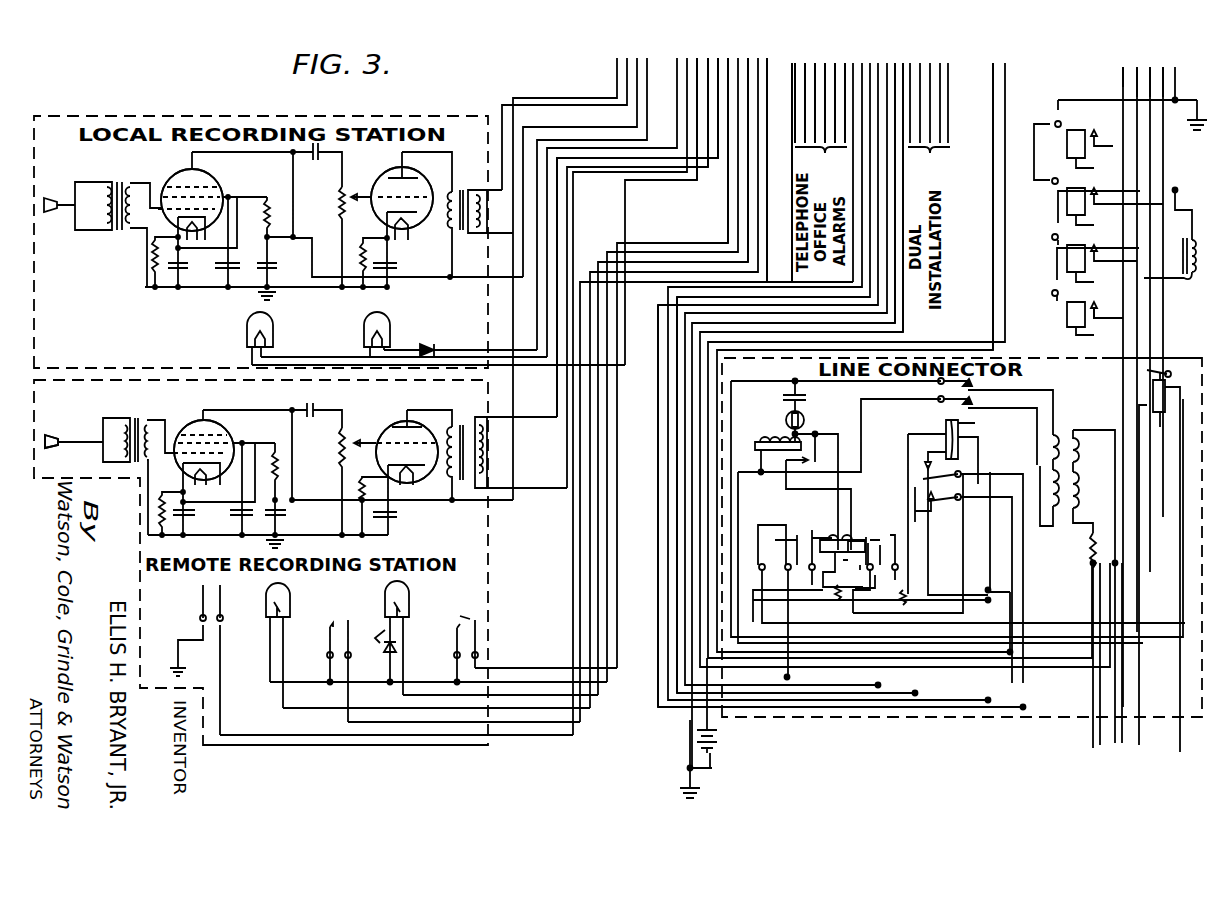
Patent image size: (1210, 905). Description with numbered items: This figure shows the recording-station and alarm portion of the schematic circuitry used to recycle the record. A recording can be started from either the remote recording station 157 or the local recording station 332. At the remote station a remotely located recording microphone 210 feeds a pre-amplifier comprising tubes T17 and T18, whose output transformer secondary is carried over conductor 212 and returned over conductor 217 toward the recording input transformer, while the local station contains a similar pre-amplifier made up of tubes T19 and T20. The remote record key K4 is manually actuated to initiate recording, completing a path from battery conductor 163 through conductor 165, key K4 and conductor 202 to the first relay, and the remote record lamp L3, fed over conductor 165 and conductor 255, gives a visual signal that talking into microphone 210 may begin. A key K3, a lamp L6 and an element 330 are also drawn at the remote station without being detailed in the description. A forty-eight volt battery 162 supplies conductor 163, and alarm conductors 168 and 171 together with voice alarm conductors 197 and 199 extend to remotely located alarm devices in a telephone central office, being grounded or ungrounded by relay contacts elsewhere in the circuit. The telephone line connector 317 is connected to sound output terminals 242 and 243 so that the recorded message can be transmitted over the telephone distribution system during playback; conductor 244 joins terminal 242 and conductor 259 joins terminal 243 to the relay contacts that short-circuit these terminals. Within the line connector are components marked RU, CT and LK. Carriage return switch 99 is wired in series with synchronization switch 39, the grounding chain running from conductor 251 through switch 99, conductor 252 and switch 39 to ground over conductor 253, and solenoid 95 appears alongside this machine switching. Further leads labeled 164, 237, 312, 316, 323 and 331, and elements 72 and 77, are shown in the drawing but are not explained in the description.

The conductor 212 is at (715, 68).
The alarm conductor 168 is at (793, 63).
The alarm conductor 171 is at (805, 63).
The voice alarm conductor 197 is at (818, 63).
The voice alarm conductor 199 is at (836, 63).
The conductor 237 is at (1118, 75).
The local recording station 332 is at (1140, 65).
The conductor 312 is at (1166, 75).
The conductor 251 is at (1140, 83).
The conductor 253 is at (1058, 100).
The synchronization switch 39 is at (1063, 120).
The relay 77 is at (1050, 186).
The relay 72 is at (1050, 243).
The carriage return switch 99 is at (1050, 299).
The solenoid 95 is at (1182, 286).
The conductor 252 is at (1115, 310).
The telephone line connector 317 is at (1105, 346).
The battery conductor 163 is at (993, 296).
The conductor 323 is at (905, 310).
The conductor 316 is at (910, 332).
The conductor 217 is at (697, 120).
The conductor 202 is at (682, 144).
The conductor 164 is at (726, 180).
The conductor 331 is at (747, 189).
The conductor 165 is at (789, 202).
The conductor 255 is at (762, 224).
The conductor 244 is at (675, 294).
The conductor 259 is at (658, 383).
The recording microphone 210 is at (56, 437).
The remote recording station 157 is at (232, 754).
The sound output terminal 242 is at (1090, 565).
The sound output terminal 243 is at (1115, 563).
The battery 162 is at (690, 733).
The rectifier 330 is at (361, 659).
The key K3 is at (230, 585).
The remote record key K4 is at (451, 643).
The remote record lamp L3 is at (292, 595).
The lamp L6 is at (410, 597).
The pre-amplifier tube T17 is at (188, 410).
The pre-amplifier tube T18 is at (393, 410).
The local pre-amplifier tube T19 is at (218, 178).
The local pre-amplifier tube T20 is at (386, 168).
The relay RU is at (837, 464).
The relay CT is at (961, 506).
The relay LK is at (832, 565).